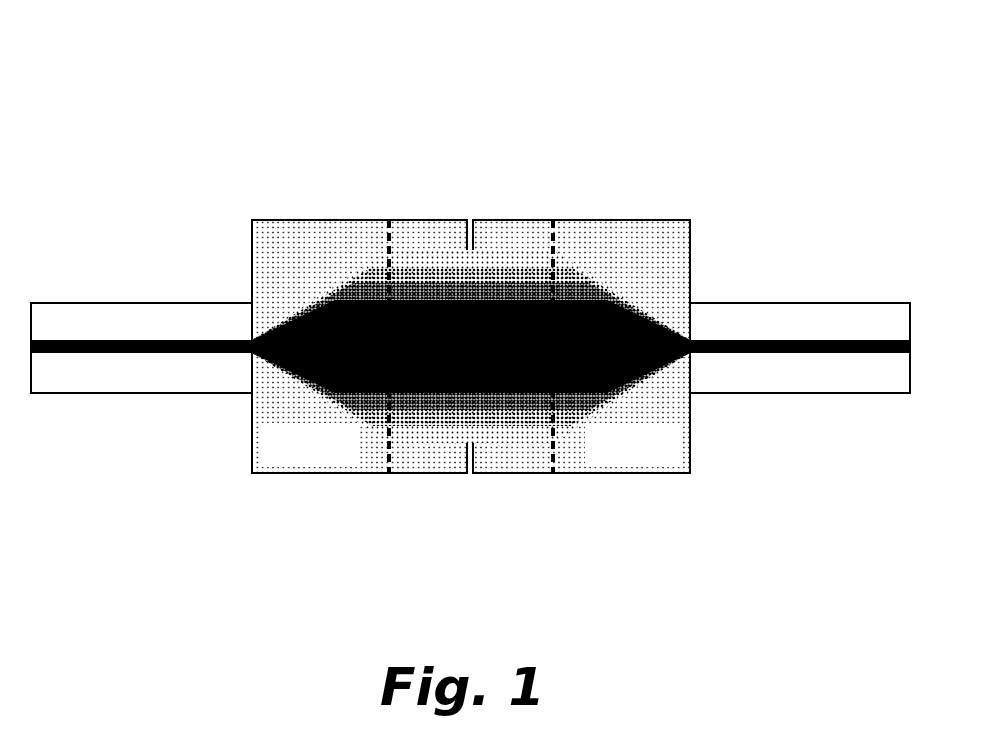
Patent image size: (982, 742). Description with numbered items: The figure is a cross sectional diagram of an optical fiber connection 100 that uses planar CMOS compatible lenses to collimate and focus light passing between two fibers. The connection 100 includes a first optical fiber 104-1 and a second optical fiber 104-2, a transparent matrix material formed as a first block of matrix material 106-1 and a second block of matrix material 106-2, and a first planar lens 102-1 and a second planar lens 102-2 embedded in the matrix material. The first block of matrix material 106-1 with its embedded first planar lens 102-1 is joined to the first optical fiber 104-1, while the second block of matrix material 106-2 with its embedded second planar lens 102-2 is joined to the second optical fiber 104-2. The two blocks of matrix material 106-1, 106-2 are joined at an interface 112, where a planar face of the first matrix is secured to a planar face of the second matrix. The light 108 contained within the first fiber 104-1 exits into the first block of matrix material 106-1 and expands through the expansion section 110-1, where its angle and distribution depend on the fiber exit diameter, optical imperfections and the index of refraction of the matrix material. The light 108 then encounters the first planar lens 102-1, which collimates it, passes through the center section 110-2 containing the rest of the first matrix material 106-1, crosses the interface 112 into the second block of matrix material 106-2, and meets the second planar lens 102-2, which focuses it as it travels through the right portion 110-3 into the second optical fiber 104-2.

The optical fiber connection 100 is at (181, 91).
The first planar lens 102-1 is at (389, 476).
The second planar lens 102-2 is at (553, 476).
The first optical fiber 104-1 is at (117, 336).
The second optical fiber 104-2 is at (764, 334).
The first block of matrix material 106-1 is at (281, 455).
The second block of matrix material 106-2 is at (603, 455).
The light 108 is at (303, 304).
The expansion section 110-1 is at (385, 210).
The center section 110-2 is at (395, 210).
The right portion 110-3 is at (560, 210).
The interface 112 is at (468, 479).